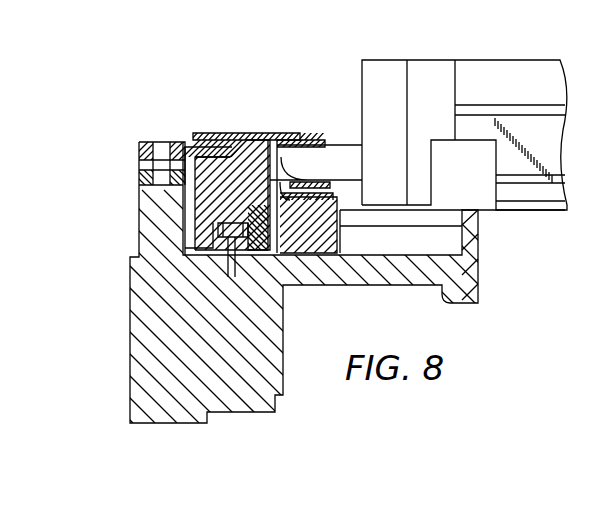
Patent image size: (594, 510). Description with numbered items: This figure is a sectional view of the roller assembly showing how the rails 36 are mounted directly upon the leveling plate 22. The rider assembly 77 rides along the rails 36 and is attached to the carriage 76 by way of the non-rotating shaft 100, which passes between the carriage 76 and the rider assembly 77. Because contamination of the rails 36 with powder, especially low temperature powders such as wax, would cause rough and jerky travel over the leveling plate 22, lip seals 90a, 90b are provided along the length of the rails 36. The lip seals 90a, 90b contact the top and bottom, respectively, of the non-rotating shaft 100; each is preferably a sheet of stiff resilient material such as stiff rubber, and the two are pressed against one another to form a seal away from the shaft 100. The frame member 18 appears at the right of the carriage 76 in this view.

The frame member 18 is at (520, 212).
The leveling plate 22 is at (358, 288).
The rails 36 is at (226, 226).
The carriage 76 is at (499, 60).
The rider assembly 77 is at (262, 191).
The lip seal 90a is at (317, 142).
The lip seal 90b is at (251, 138).
The non-rotating shaft 100 is at (345, 143).